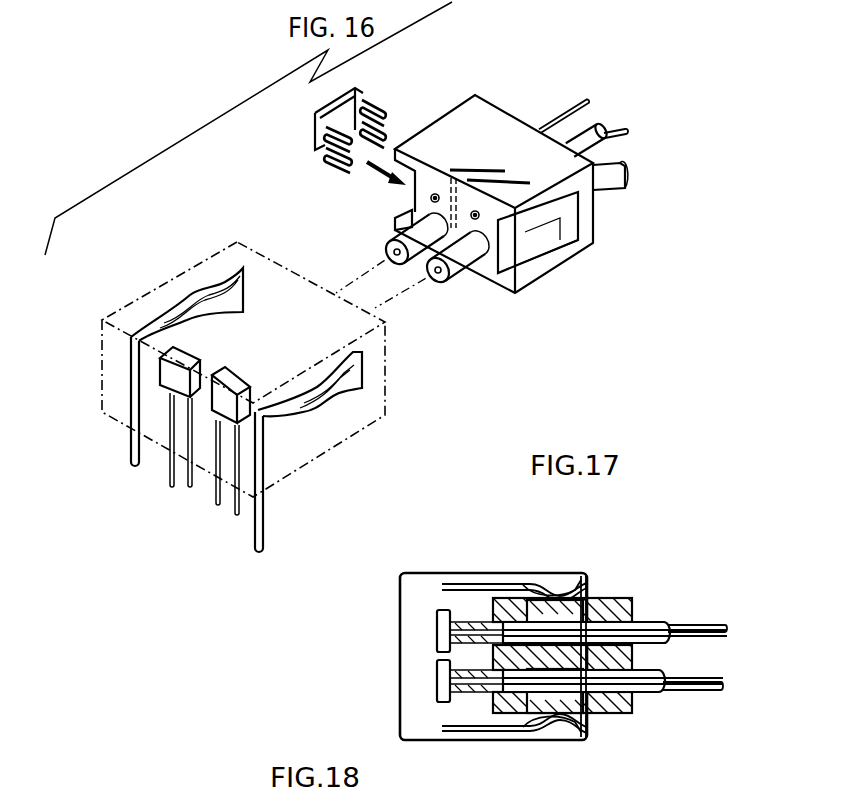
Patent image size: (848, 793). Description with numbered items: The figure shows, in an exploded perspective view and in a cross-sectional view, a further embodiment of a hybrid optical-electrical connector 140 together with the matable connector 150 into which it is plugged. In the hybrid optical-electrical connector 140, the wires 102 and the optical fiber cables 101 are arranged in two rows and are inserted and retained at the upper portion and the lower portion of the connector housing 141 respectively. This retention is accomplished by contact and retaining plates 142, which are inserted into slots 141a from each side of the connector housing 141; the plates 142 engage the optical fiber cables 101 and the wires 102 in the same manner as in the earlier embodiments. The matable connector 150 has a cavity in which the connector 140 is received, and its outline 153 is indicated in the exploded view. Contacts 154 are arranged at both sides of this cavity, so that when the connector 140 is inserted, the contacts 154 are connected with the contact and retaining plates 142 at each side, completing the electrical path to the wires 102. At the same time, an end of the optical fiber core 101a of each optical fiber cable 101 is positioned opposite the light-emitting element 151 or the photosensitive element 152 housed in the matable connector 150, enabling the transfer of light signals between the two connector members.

In FIG. 16, the optical fiber cable 101 is at (590, 120).
In FIG. 17, the optical fiber cable 101 is at (650, 625).
In FIG. 17, the optical fiber core 101a is at (470, 623).
In FIG. 16, the wire 102 is at (553, 115).
In FIG. 17, the wire 102 is at (713, 622).
In FIG. 16, the hybrid optical-electrical connector 140 is at (490, 90).
In FIG. 17, the hybrid optical-electrical connector 140 is at (602, 660).
In FIG. 16, the connector housing 141 is at (445, 123).
In FIG. 17, the connector housing 141 is at (623, 598).
In FIG. 17, the slot 141a is at (543, 600).
In FIG. 16, the contact and retaining plate 142 is at (314, 131).
In FIG. 17, the contact and retaining plate 142 is at (587, 582).
In FIG. 16, the matable connector 150 is at (183, 250).
In FIG. 17, the matable connector 150 is at (423, 563).
In FIG. 17, the light-emitting element 151 is at (440, 627).
In FIG. 17, the photosensitive element 152 is at (440, 677).
In FIG. 16, the receptacle housing 153 is at (247, 258).
In FIG. 16, the contact 154 is at (167, 327).
In FIG. 17, the contact 154 is at (495, 582).